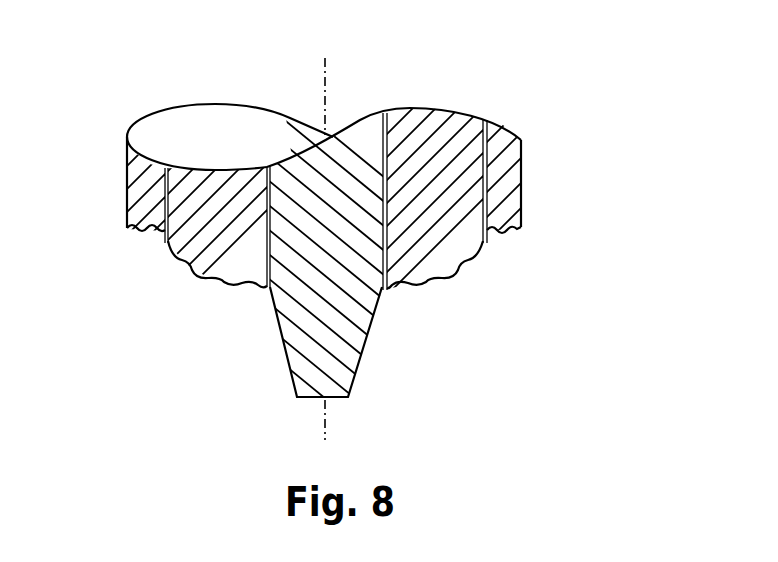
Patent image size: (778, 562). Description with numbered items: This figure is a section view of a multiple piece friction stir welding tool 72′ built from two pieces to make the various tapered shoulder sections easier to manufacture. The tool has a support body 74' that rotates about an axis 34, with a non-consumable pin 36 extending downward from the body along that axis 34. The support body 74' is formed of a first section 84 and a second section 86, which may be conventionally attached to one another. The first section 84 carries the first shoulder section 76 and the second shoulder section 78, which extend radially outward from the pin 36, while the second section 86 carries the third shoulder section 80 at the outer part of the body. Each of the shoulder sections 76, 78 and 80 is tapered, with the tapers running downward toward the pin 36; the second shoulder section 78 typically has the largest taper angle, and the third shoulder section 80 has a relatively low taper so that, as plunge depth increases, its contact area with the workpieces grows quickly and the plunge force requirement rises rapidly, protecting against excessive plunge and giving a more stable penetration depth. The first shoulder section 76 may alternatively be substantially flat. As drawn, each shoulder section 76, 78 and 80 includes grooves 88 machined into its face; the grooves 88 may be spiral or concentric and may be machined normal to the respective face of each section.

The axis 34 is at (327, 75).
The non-consumable pin 36 is at (295, 168).
The welding tool 72′ is at (580, 135).
The support body 74' is at (378, 169).
The first shoulder section 76 is at (407, 287).
The second shoulder section 78 is at (478, 252).
The third shoulder section 80 is at (497, 238).
The first section 84 is at (418, 112).
The second section 86 is at (516, 178).
The grooves 88 is at (133, 229).